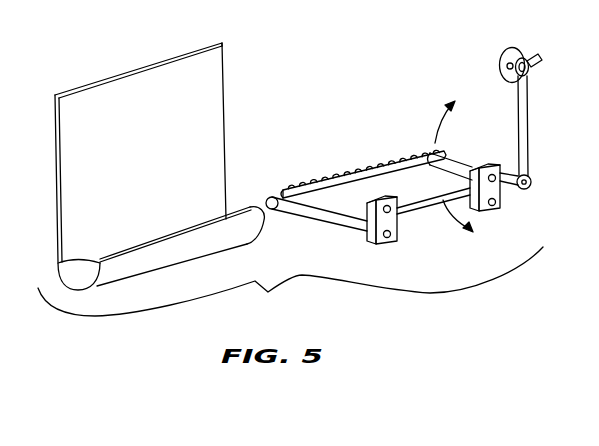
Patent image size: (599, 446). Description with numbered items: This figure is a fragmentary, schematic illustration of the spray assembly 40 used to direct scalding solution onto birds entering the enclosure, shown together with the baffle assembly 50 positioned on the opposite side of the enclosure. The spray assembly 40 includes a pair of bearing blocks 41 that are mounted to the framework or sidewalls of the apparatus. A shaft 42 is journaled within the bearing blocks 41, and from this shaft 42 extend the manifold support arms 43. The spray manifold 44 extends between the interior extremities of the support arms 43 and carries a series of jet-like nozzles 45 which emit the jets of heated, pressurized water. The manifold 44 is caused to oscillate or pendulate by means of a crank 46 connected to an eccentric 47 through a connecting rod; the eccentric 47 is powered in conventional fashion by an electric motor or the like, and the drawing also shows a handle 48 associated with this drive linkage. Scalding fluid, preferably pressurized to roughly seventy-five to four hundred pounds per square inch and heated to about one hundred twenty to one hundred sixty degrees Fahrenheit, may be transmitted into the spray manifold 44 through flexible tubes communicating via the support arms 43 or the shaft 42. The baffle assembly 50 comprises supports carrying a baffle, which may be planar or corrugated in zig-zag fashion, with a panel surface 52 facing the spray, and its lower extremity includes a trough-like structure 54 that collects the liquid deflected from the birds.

The spray assembly 40 is at (353, 96).
The bearing blocks 41 is at (400, 238).
The shaft 42 is at (433, 215).
The manifold support arms 43 is at (313, 209).
The spray manifold 44 is at (398, 152).
The jet-like nozzles 45 is at (301, 190).
The crank 46 is at (533, 181).
The eccentric 47 is at (514, 48).
The handle 48 is at (527, 120).
The baffle assembly 50 is at (177, 58).
The panel surface 52 is at (148, 177).
The trough-like structure 54 is at (148, 257).